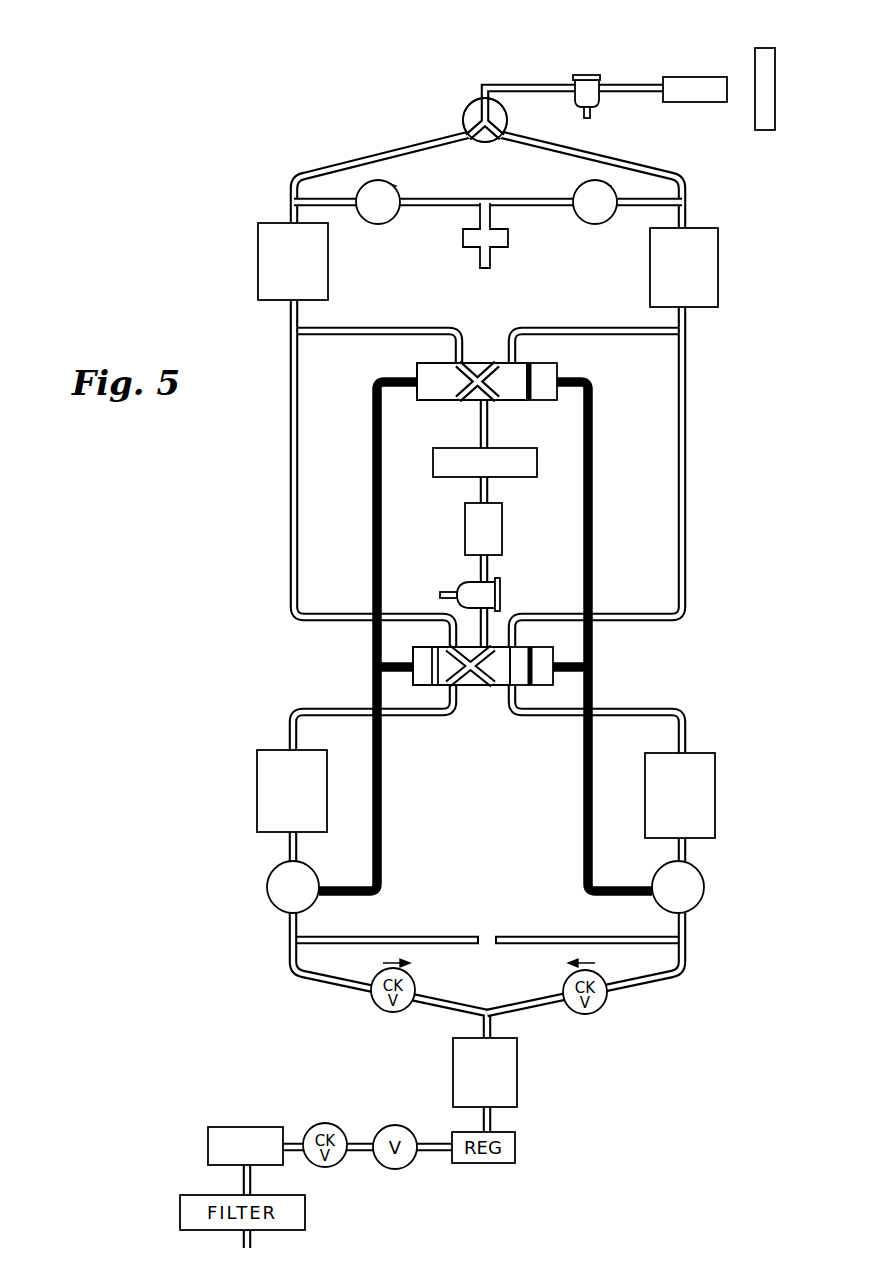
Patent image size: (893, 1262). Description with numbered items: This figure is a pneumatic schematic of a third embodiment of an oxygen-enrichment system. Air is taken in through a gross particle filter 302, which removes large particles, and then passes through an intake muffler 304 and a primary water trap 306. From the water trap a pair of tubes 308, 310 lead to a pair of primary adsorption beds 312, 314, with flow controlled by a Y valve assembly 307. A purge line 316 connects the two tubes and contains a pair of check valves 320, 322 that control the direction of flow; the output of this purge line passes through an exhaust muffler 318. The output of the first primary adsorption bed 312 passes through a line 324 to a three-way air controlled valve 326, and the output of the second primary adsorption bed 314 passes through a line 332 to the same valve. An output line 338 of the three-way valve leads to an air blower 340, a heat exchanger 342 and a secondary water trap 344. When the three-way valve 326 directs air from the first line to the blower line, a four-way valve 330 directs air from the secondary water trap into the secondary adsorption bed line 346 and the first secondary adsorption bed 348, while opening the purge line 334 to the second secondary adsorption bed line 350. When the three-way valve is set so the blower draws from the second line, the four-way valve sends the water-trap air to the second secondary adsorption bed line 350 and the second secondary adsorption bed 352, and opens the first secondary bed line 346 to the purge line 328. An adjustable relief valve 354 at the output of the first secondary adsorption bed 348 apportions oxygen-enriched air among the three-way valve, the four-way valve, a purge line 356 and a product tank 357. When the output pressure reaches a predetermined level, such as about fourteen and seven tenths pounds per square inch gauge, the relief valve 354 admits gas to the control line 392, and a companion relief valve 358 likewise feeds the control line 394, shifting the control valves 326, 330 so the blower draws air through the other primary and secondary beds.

The gross particle filter 302 is at (768, 122).
The intake muffler 304 is at (695, 80).
The primary water trap 306 is at (586, 75).
The Y valve assembly 307 is at (463, 108).
The tube 308 is at (384, 151).
The tube 310 is at (627, 163).
The first primary adsorption bed 312 is at (258, 245).
The second primary adsorption bed 314 is at (712, 255).
The purge line 316 is at (537, 202).
The exhaust muffler 318 is at (508, 238).
The check valve 320 is at (383, 225).
The check valve 322 is at (598, 226).
The line 324 is at (372, 329).
The three-way air controlled valve 326 is at (545, 368).
The purge line 328 is at (292, 480).
The four-way valve 330 is at (574, 680).
The line 332 is at (596, 328).
The purge line 334 is at (686, 480).
The output line 338 is at (486, 418).
The air blower 340 is at (512, 470).
The heat exchanger 342 is at (465, 532).
The secondary water trap 344 is at (492, 592).
The secondary adsorption bed line 346 is at (289, 728).
The first secondary adsorption bed 348 is at (268, 792).
The second secondary adsorption bed line 350 is at (687, 735).
The second secondary adsorption bed 352 is at (707, 793).
The adjustable relief valve 354 is at (268, 896).
The purge line 356 is at (450, 935).
The product tank 357 is at (517, 1073).
The relief valve 358 is at (702, 895).
The control line 392 is at (374, 523).
The control line 394 is at (593, 535).